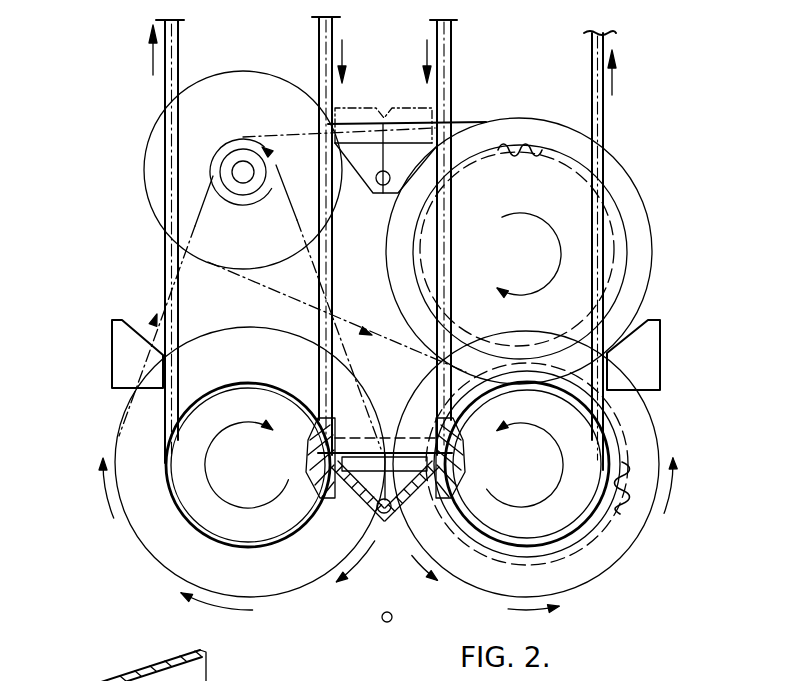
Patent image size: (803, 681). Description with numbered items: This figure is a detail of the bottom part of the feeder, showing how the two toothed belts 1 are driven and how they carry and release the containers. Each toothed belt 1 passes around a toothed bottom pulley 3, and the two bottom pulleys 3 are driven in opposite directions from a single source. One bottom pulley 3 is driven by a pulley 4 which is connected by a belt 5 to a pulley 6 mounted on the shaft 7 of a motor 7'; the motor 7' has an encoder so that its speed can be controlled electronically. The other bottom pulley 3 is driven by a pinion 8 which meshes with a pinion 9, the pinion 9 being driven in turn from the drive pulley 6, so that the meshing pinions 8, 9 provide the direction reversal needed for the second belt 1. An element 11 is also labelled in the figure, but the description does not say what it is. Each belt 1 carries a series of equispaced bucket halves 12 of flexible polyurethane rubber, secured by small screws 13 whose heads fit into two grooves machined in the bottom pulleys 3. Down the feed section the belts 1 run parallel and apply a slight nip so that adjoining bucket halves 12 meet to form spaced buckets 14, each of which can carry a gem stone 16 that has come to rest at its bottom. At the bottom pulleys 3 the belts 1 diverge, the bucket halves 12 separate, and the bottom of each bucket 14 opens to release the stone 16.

The toothed belt 1 is at (314, 414).
The bottom pulley 3 is at (192, 487).
The pulley 4 is at (295, 573).
The belt 5 is at (152, 322).
The pulley 6 is at (222, 163).
The shaft 7 is at (194, 189).
The motor 7' is at (243, 146).
The pinion 8 is at (608, 513).
The pinion 9 is at (522, 158).
The upper hopper 11 is at (465, 122).
The bucket half 12 is at (353, 506).
The screw 13 is at (314, 466).
The bucket 14 is at (408, 400).
The gem stone 16 is at (378, 190).